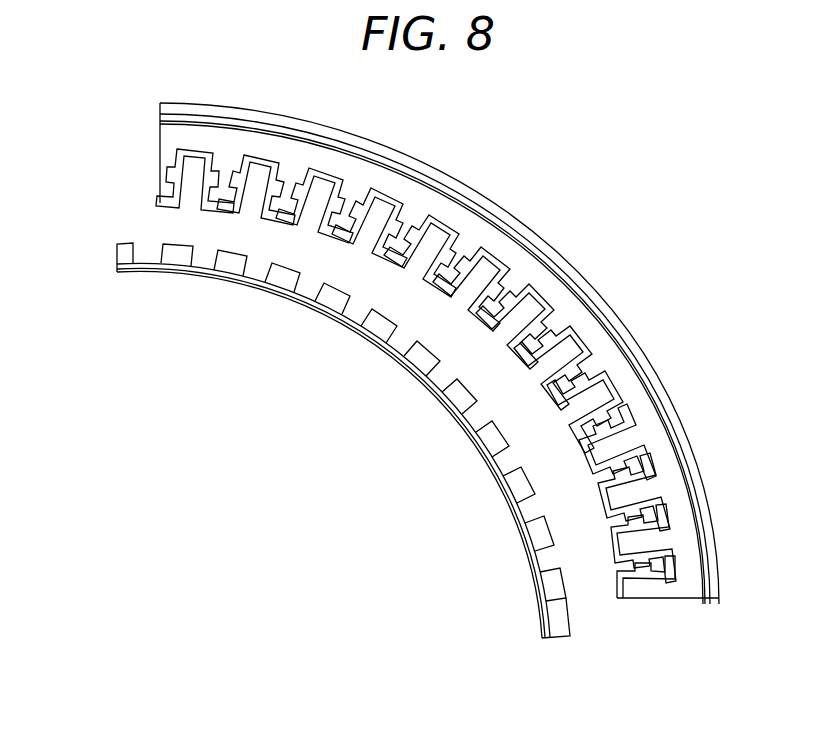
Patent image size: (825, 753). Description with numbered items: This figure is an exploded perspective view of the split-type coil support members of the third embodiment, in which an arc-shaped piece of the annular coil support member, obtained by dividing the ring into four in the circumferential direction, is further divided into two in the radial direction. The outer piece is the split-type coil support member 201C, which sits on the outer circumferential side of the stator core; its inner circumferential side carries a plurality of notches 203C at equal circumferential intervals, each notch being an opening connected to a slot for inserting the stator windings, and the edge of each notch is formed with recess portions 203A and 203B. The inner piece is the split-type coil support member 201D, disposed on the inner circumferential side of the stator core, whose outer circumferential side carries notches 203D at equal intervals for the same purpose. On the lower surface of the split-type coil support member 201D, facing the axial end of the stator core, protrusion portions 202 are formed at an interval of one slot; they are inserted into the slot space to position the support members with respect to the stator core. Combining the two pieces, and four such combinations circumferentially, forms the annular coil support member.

The split-type coil support member 201C is at (592, 322).
The split-type coil support member 201D is at (553, 638).
The protrusion portion 202 is at (147, 274).
The recess portion 203A is at (673, 553).
The recess portion 203B is at (667, 584).
The notch 203C is at (653, 490).
The notch 203D is at (567, 609).